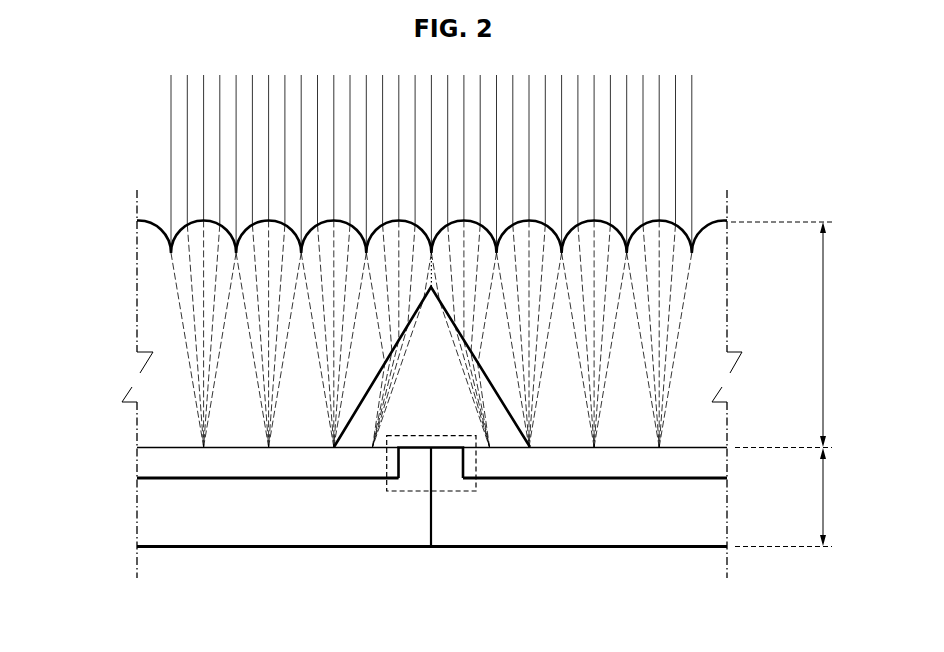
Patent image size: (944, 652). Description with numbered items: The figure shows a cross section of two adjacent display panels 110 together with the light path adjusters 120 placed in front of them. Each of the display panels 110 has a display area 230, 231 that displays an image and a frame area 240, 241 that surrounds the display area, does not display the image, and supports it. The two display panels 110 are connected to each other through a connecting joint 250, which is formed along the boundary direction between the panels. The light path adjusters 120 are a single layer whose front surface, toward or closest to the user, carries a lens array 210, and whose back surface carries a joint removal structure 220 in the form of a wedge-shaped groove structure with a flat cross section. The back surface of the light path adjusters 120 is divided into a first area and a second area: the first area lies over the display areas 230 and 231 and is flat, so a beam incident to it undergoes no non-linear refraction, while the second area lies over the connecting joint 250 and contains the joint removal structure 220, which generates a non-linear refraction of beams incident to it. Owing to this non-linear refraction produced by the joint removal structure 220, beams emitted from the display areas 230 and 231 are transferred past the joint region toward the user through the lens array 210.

The lens array 210 is at (153, 240).
The joint removal structure 220 is at (349, 430).
The display area 230 is at (152, 467).
The display area 231 is at (712, 468).
The frame area 240 is at (152, 523).
The frame area 241 is at (712, 521).
The connecting joint 250 is at (453, 491).
The light path adjusters 120 is at (801, 335).
The display panels 110 is at (803, 497).